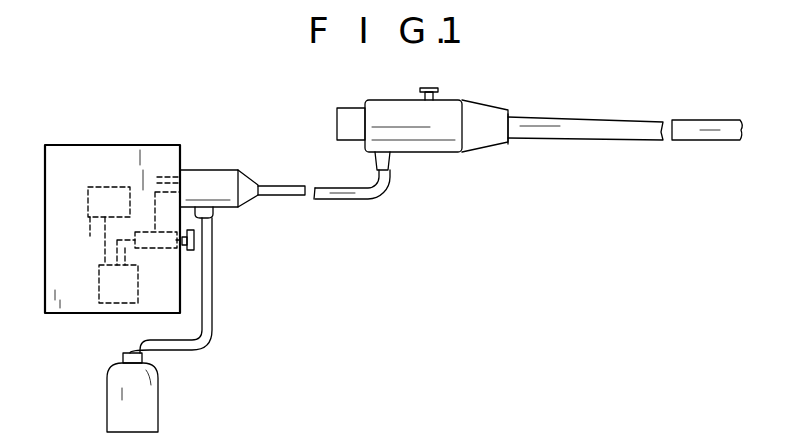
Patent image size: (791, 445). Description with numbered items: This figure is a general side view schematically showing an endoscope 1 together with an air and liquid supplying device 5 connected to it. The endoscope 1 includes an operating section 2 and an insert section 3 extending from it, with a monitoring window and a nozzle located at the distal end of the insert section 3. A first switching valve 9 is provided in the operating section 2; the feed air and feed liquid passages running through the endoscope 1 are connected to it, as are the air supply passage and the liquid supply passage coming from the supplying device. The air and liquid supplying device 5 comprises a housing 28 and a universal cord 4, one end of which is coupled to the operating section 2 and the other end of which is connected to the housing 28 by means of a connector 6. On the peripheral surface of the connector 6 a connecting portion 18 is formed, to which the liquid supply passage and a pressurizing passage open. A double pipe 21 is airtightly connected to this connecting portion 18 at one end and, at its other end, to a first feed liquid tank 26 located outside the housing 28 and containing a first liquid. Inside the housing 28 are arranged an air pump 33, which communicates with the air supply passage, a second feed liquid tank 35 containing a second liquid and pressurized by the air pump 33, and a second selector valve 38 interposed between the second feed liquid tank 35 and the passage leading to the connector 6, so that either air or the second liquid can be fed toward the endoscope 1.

The endoscope 1 is at (548, 112).
The operating section 2 is at (447, 152).
The insert section 3 is at (619, 142).
The universal cord 4 is at (365, 200).
The air and liquid supplying device 5 is at (242, 141).
The connector 6 is at (229, 178).
The first switching valve 9 is at (447, 95).
The connecting portion 18 is at (215, 212).
The double pipe 21 is at (212, 326).
The first feed liquid tank 26 is at (152, 398).
The housing 28 is at (100, 145).
The air pump 33 is at (90, 236).
The second feed liquid tank 35 is at (99, 284).
The second selector valve 38 is at (162, 253).